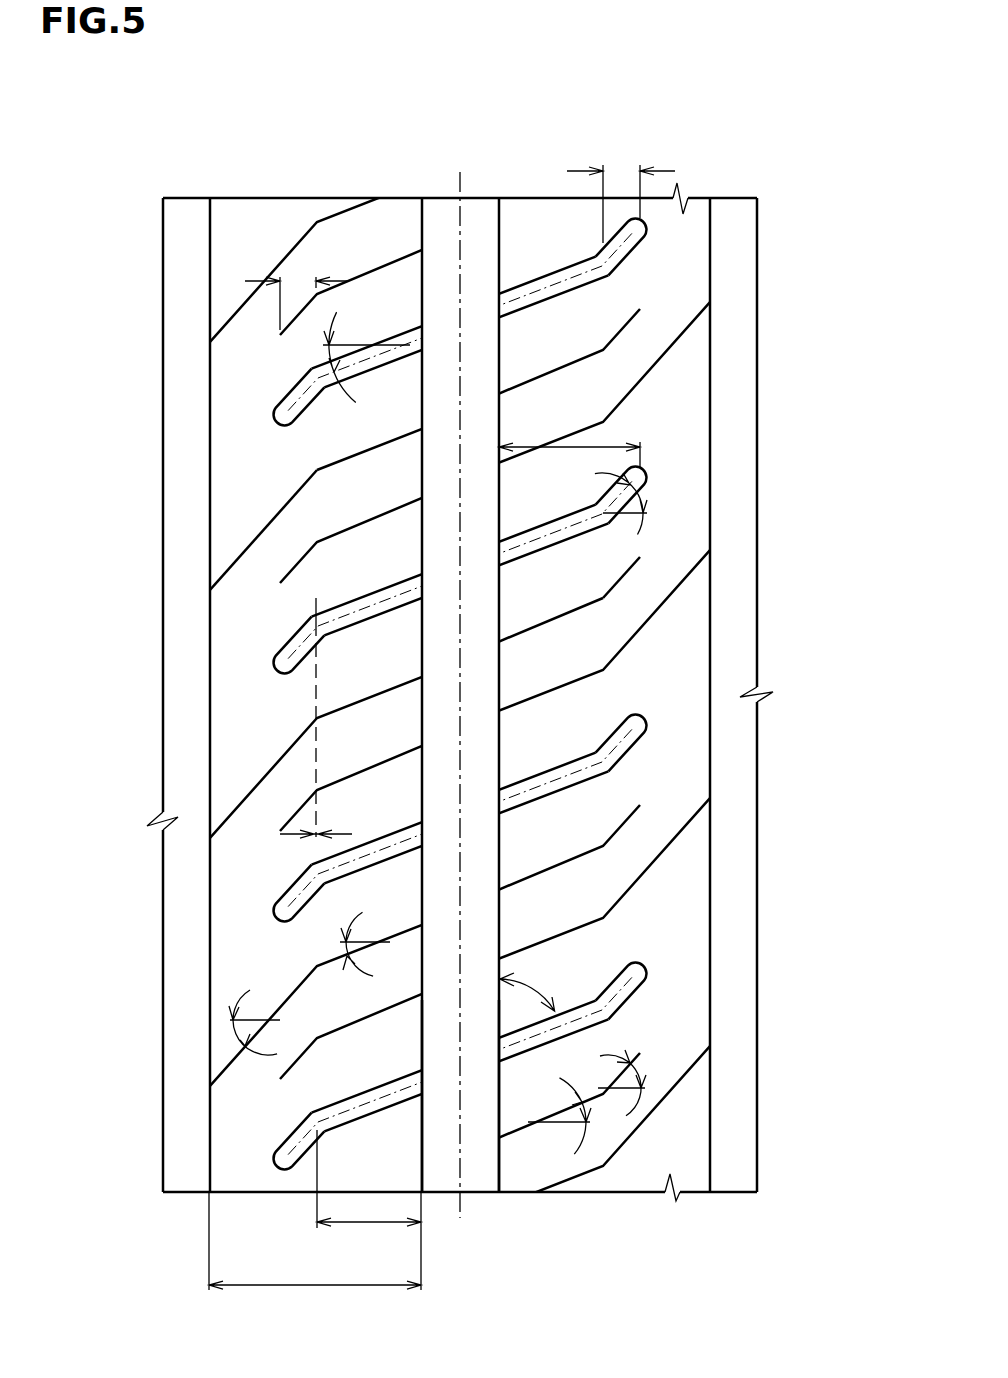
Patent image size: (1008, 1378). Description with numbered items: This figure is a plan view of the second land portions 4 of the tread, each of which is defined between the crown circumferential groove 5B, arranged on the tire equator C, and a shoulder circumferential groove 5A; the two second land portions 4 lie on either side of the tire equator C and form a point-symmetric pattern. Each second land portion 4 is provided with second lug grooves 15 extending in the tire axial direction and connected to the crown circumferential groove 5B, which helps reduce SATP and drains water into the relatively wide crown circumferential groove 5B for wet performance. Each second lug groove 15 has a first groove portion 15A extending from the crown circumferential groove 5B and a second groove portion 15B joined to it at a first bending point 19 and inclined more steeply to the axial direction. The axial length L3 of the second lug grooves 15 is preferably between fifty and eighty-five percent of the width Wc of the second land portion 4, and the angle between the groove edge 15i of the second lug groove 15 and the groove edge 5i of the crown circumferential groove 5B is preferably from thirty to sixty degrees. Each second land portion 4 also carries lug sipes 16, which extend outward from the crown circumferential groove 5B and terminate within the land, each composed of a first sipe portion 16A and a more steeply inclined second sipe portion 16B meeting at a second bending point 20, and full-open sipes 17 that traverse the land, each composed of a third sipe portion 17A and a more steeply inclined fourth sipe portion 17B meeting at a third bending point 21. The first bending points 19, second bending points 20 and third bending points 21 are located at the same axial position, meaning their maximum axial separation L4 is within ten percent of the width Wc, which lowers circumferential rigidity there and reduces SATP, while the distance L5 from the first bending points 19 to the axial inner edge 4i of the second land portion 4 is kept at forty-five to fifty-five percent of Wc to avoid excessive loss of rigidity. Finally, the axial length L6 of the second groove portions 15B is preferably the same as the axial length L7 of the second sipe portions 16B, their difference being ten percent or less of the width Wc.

The shoulder circumferential groove 5A is at (192, 223).
The second land portion 4 is at (253, 223).
The crown circumferential groove 5B is at (486, 223).
The tire equator C is at (459, 681).
The axial inner edge of second land portion 4i is at (423, 1127).
The groove edge of crown circumferential groove 5i is at (502, 1095).
The second lug groove 15 is at (312, 368).
The first groove portion 15A is at (560, 778).
The second groove portion 15B is at (622, 742).
The groove edge of second lug groove 15i is at (608, 975).
The lug sipe 16 is at (703, 607).
The first sipe portion 16A is at (567, 617).
The second sipe portion 16B is at (625, 580).
The full-open sipe 17 is at (222, 509).
The third sipe portion 17A is at (385, 445).
The fourth sipe portion 17B is at (262, 532).
The first bending point 19 is at (295, 617).
The second bending point 20 is at (295, 792).
The third bending point 21 is at (295, 717).
The length of second lug groove L3 is at (602, 445).
The maximum separation distance L4 is at (316, 843).
The distance between first bending point and axial inner edge L5 is at (369, 1194).
The length of second groove portion L6 is at (621, 191).
The length of second sipe portion L7 is at (297, 281).
The width of second land portion Wc is at (315, 1255).